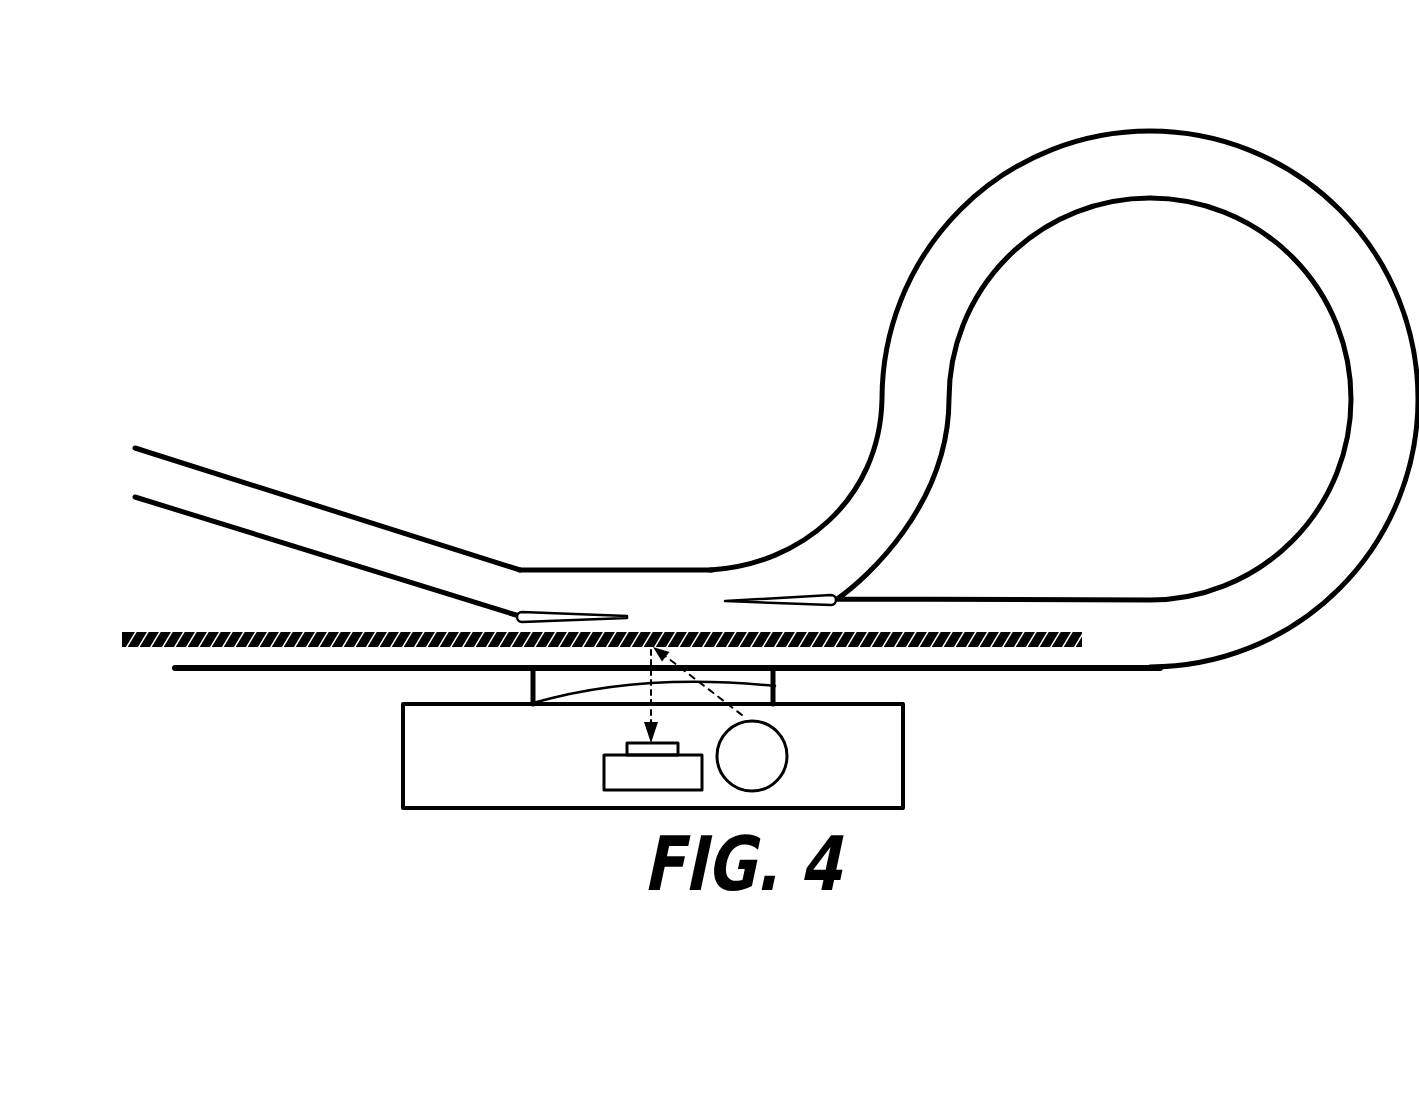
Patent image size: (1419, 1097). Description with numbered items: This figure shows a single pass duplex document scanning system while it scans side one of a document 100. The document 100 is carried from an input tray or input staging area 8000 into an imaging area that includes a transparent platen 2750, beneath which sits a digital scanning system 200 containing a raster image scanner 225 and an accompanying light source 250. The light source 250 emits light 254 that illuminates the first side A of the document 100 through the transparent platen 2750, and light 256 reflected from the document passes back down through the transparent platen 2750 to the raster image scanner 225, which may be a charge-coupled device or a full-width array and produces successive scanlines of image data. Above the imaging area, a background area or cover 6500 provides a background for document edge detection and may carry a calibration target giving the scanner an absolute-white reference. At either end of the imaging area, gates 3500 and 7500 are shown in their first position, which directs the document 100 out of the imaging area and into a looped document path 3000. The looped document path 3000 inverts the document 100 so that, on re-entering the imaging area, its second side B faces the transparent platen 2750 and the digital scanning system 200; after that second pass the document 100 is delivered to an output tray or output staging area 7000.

The document 100 is at (217, 632).
The digital scanning system 200 is at (467, 795).
The raster image scanner 225 is at (603, 773).
The light source 250 is at (784, 748).
The light 254 is at (775, 686).
The light 256 is at (531, 702).
The transparent platen 2750 is at (557, 680).
The looped document path 3000 is at (980, 300).
The gate 3500 is at (807, 597).
The background area or cover 6500 is at (642, 567).
The output tray or output staging area 7000 is at (265, 488).
The gate 7500 is at (567, 612).
The input tray or input staging area 8000 is at (242, 668).
The first side A is at (320, 660).
The second side B is at (304, 624).